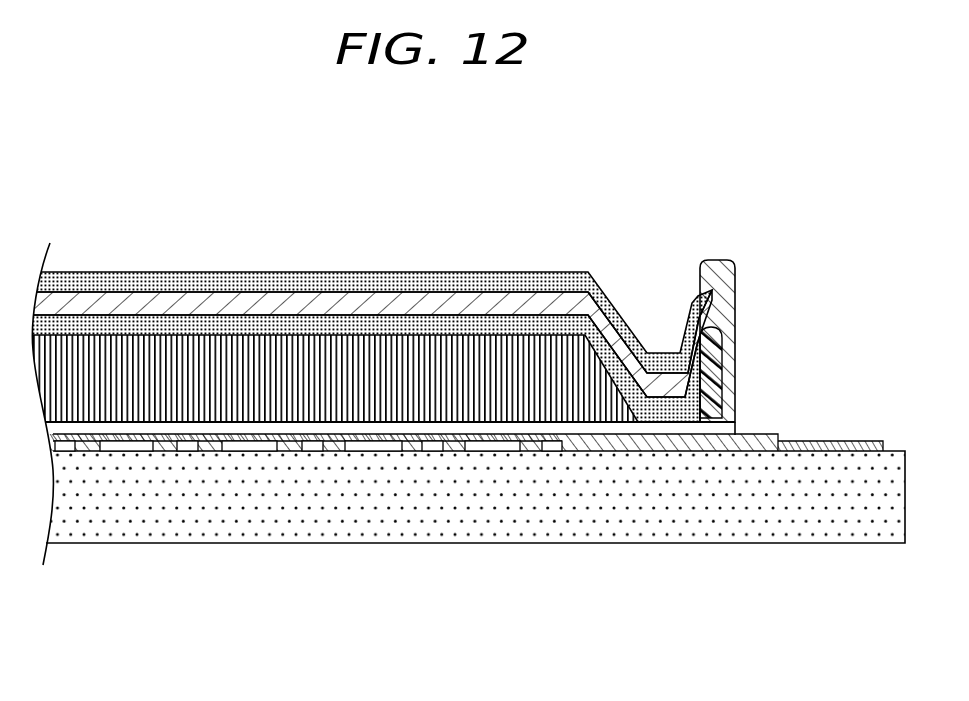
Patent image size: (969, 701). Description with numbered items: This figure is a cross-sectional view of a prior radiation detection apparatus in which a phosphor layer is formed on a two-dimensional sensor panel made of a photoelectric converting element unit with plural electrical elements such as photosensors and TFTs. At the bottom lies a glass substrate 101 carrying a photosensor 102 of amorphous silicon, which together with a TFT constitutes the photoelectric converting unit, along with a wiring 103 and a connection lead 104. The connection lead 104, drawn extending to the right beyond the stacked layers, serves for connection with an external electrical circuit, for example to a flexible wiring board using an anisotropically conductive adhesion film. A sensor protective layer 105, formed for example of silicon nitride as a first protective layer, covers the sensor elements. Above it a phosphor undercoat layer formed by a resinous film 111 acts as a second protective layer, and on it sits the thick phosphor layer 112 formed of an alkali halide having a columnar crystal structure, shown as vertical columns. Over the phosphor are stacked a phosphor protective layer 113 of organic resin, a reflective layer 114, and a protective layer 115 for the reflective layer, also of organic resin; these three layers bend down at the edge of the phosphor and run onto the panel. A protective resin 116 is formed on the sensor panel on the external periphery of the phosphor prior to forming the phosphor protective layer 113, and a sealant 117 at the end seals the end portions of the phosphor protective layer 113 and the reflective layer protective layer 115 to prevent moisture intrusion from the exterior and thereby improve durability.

The glass substrate 101 is at (123, 525).
The photosensor 102 is at (243, 447).
The wiring 103 is at (310, 447).
The connection lead 104 is at (835, 441).
The sensor protective layer 105 is at (450, 450).
The resinous film 111 is at (103, 428).
The phosphor layer 112 is at (193, 350).
The phosphor protective layer 113 is at (217, 320).
The reflective layer 114 is at (336, 297).
The protective layer for the reflective layer 115 is at (456, 280).
The protective resin 116 is at (706, 330).
The sealant 117 is at (717, 262).